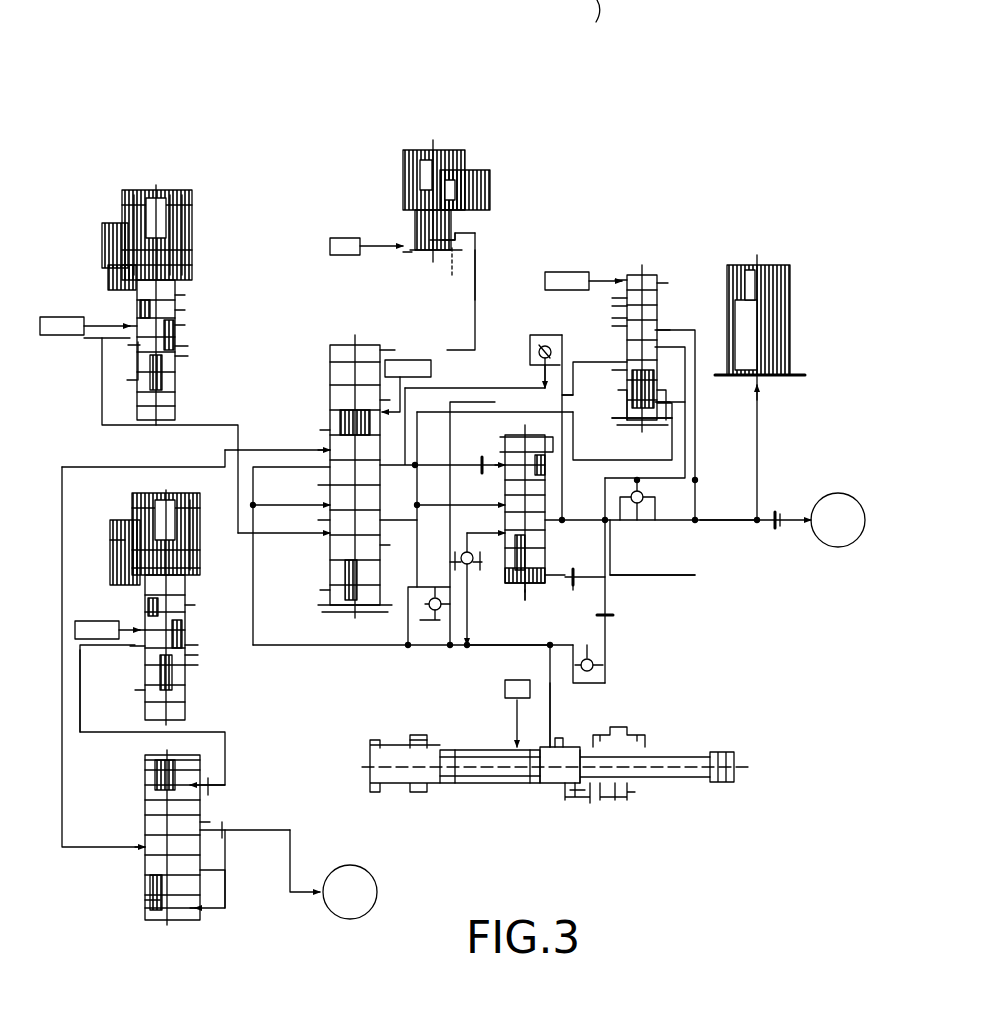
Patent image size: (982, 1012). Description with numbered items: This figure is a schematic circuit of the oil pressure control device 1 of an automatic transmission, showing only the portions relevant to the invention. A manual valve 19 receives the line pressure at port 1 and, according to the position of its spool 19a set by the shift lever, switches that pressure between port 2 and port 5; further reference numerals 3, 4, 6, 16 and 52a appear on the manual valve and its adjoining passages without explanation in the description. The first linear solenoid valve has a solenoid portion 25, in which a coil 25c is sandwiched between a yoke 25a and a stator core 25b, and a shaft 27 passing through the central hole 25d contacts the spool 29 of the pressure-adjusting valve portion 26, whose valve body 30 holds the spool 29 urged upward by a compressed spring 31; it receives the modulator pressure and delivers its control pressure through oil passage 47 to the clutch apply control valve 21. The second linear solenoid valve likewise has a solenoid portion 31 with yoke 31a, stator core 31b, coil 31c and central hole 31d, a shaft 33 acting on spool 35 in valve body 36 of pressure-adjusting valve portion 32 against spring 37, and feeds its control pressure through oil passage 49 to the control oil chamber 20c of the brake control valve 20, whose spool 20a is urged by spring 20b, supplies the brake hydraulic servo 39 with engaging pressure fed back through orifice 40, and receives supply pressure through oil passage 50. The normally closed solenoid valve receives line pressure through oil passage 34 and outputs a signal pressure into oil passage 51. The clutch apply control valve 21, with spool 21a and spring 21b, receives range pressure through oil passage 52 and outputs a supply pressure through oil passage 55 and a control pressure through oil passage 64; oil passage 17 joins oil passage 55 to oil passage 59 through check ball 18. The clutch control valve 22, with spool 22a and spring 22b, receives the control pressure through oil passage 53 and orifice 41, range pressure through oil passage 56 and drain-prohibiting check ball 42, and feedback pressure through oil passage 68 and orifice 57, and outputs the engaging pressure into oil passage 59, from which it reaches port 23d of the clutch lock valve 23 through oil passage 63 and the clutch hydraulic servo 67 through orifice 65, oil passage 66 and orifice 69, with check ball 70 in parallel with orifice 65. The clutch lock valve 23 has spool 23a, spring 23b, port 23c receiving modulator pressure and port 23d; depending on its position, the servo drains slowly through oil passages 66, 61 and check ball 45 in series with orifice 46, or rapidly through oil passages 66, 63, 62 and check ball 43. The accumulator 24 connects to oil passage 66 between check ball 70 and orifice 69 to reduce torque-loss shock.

The port 1 is at (508, 723).
The port 2 is at (550, 727).
The port 3 is at (577, 803).
The port 4 is at (617, 803).
The port 5 is at (619, 727).
The port 6 is at (418, 727).
The oil passage 16 is at (552, 700).
The oil passage 17 is at (480, 352).
The check ball 18 is at (538, 345).
The manual valve 19 is at (655, 718).
The spool 19a is at (548, 785).
The brake control valve 20 is at (135, 797).
The spool 20a is at (206, 795).
The spring 20b is at (148, 905).
The control oil chamber 20c is at (176, 746).
The clutch apply control valve 21 is at (330, 362).
The spool 21a is at (330, 430).
The spring 21b is at (325, 588).
The clutch control valve 22 is at (503, 446).
The spool 22a is at (548, 488).
The spring 22b is at (522, 586).
The clutch lock valve 23 is at (665, 275).
The spool 23a is at (660, 284).
The spring 23b is at (645, 420).
The port 23c is at (622, 278).
The port 23d is at (690, 389).
The C-1 accumulator 24 is at (785, 262).
The solenoid portion 25 is at (192, 188).
The yoke 25a is at (192, 206).
The stator core 25b is at (192, 230).
The coil 25c is at (192, 268).
The central hole 25d is at (158, 190).
The pressure-adjusting valve portion 26 is at (182, 300).
The shaft 27 is at (192, 248).
The spool 29 is at (178, 326).
The valve body 30 is at (137, 300).
The solenoid portion 31 is at (173, 382).
The yoke 31a is at (200, 530).
The stator core 31b is at (200, 568).
The coil 31c is at (200, 576).
The central hole 31d is at (160, 467).
The pressure-adjusting valve portion 32 is at (192, 612).
The shaft 33 is at (110, 540).
The oil passage 34 is at (372, 246).
The spool 35 is at (188, 646).
The valve body 36 is at (140, 595).
The compressed spring 37 is at (187, 690).
The hydraulic servo 39 is at (350, 920).
The orifice 40 is at (230, 842).
The orifice 41 is at (460, 453).
The drain-prohibiting check ball 42 is at (472, 590).
The check ball 43 is at (418, 647).
The check ball 45 is at (608, 676).
The orifice 46 is at (615, 614).
The oil passage 47 is at (246, 420).
The oil passage 49 is at (80, 735).
The oil passage 50 is at (68, 467).
The oil passage 51 is at (478, 274).
The oil passage 52 is at (325, 647).
The oil passage 52a is at (270, 503).
The oil passage 53 is at (400, 465).
The oil passage 55 is at (418, 508).
The oil passage 56 is at (470, 643).
The orifice 57 is at (573, 590).
The oil passage 59 is at (585, 569).
The oil passage 61 is at (628, 573).
The oil passage 62 is at (500, 412).
The oil passage 63 is at (686, 408).
The oil passage 64 is at (466, 388).
The orifice 65 is at (652, 547).
The oil passage 66 is at (730, 522).
The hydraulic servo 67 is at (838, 493).
The oil passage 68 is at (687, 440).
The orifice 69 is at (776, 512).
The check ball 70 is at (639, 514).